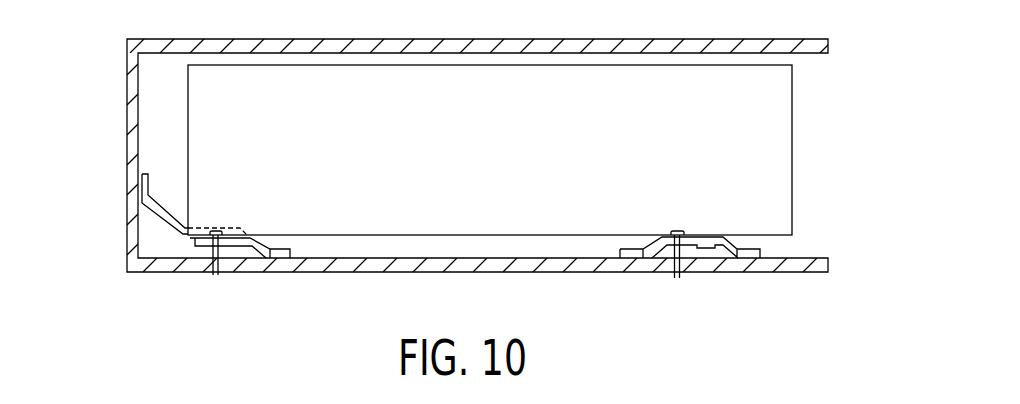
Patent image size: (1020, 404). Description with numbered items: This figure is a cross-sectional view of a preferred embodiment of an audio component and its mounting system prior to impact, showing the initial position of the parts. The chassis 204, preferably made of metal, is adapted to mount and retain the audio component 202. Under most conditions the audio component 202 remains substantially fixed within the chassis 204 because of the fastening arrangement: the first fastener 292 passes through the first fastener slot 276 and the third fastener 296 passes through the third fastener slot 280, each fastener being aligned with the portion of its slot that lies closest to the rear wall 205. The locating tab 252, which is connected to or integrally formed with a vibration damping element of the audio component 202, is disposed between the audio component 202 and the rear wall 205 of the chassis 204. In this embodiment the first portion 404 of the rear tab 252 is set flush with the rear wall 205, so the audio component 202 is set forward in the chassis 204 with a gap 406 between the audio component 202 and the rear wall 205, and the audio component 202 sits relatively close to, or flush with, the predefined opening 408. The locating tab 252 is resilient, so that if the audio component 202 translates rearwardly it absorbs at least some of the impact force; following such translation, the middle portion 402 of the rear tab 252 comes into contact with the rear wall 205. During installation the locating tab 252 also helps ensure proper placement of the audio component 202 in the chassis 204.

The audio component 202 is at (775, 101).
The chassis 204 is at (815, 244).
The rear wall 205 is at (132, 127).
The locating tab 252 is at (145, 212).
The first fastener slot 276 is at (220, 238).
The third fastener slot 280 is at (688, 235).
The first fastener 292 is at (214, 276).
The third fastener 296 is at (678, 279).
The middle portion 402 is at (163, 223).
The first portion 404 is at (148, 185).
The gap 406 is at (158, 99).
The predefined opening 408 is at (815, 163).